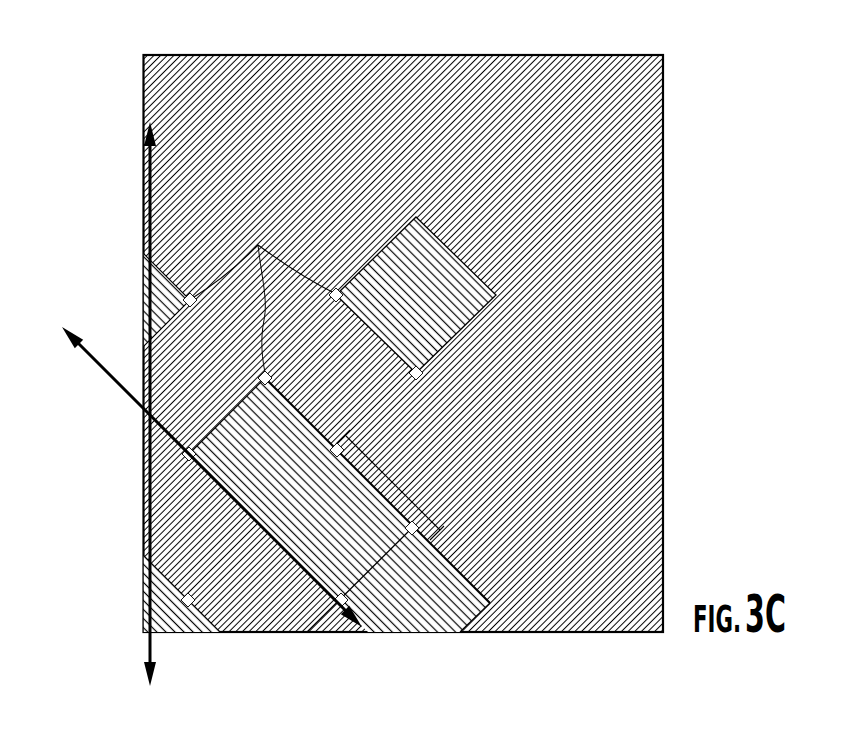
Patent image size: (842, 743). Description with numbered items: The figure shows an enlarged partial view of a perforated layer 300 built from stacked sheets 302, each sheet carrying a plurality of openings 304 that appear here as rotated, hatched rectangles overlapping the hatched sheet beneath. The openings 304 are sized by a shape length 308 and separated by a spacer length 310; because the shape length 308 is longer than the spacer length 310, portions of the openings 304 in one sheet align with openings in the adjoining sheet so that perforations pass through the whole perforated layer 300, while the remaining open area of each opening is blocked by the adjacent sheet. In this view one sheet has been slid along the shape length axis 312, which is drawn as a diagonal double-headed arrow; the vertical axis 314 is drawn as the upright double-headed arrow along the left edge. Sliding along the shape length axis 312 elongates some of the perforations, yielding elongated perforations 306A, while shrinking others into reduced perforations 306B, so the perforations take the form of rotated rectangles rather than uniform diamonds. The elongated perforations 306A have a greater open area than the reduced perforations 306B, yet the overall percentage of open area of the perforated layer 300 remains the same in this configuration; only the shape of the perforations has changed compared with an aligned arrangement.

The perforated layer 300 is at (712, 101).
The sheet 302 is at (422, 263).
The opening 304 is at (500, 297).
The elongated perforation 306A is at (259, 246).
The reduced perforation 306B is at (420, 377).
The shape length 308 is at (372, 515).
The spacer length 310 is at (386, 466).
The shape length axis 312 is at (115, 386).
The vertical axis 314 is at (142, 212).